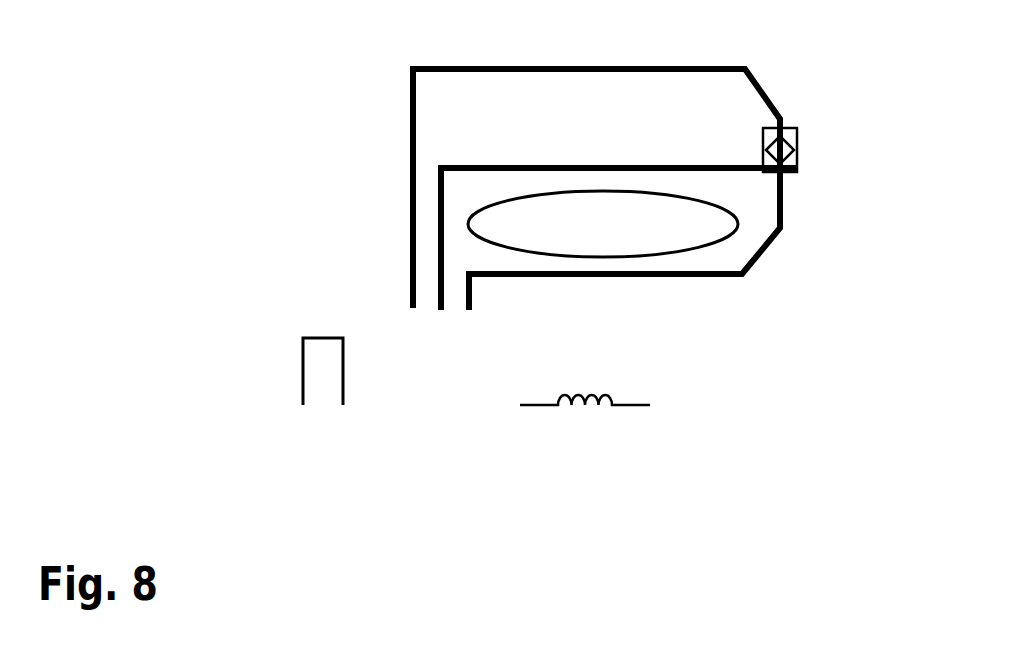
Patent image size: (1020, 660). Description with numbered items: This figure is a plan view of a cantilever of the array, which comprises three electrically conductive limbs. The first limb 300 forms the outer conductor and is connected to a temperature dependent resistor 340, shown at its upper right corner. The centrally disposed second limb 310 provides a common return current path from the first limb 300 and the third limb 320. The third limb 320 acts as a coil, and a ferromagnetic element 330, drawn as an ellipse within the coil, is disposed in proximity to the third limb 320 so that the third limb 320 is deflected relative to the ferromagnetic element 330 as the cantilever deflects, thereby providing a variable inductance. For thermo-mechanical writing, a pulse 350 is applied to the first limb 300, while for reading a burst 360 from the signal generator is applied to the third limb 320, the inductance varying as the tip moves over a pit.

The first limb 300 is at (410, 126).
The second limb 310 is at (440, 300).
The third limb 320 is at (585, 277).
The ferromagnetic element 330 is at (739, 226).
The temperature dependent resistor 340 is at (796, 127).
The pulse 350 is at (302, 366).
The burst 360 is at (585, 413).